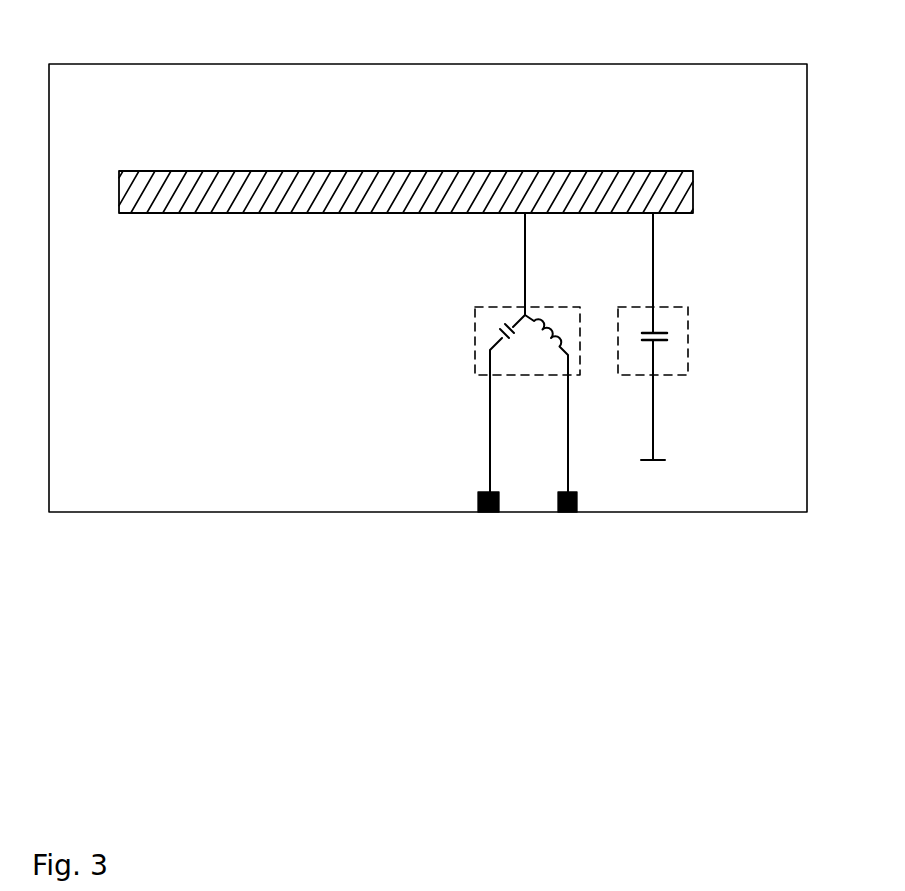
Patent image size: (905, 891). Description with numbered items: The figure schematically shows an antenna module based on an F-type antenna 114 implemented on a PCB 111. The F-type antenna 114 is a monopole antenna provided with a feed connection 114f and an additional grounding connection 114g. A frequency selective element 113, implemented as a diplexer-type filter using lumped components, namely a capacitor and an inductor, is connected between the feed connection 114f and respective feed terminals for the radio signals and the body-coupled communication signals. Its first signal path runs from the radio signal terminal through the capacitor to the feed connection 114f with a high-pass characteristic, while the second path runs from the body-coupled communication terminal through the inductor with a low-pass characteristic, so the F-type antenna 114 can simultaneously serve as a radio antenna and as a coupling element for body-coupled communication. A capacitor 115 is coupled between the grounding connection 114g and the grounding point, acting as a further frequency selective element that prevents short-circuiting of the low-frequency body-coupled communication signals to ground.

The PCB 111 is at (728, 63).
The F-type antenna 114 is at (657, 172).
The feed connection 114f is at (523, 243).
The grounding connection 114g is at (655, 258).
The frequency selective element 113 is at (560, 307).
The capacitor 115 is at (670, 307).